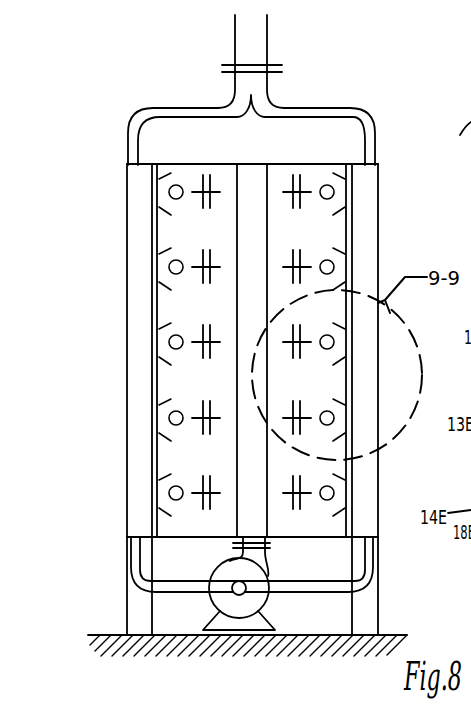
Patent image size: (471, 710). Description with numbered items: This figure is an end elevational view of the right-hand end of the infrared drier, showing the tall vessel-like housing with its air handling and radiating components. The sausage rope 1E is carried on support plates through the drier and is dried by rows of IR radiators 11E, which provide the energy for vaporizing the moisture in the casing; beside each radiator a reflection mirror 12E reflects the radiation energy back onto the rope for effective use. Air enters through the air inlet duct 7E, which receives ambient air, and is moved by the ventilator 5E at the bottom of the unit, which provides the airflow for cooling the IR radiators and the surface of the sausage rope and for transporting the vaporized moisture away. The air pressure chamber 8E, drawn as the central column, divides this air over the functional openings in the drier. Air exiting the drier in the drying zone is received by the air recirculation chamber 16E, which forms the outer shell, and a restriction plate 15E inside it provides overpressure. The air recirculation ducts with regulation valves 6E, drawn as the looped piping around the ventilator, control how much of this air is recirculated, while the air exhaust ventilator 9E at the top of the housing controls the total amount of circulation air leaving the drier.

The sausage rope 1E is at (178, 336).
The ventilator 5E is at (222, 600).
The air recirculation ducts with regulation valves 6E is at (131, 567).
The air inlet duct 7E is at (268, 545).
The air pressure chamber 8E is at (250, 172).
The air exhaust ventilator 9E is at (274, 62).
The IR radiator 11E is at (205, 283).
The reflection mirror 12E is at (167, 332).
The restriction plate 15E is at (155, 202).
The air recirculation chamber 16E is at (137, 183).